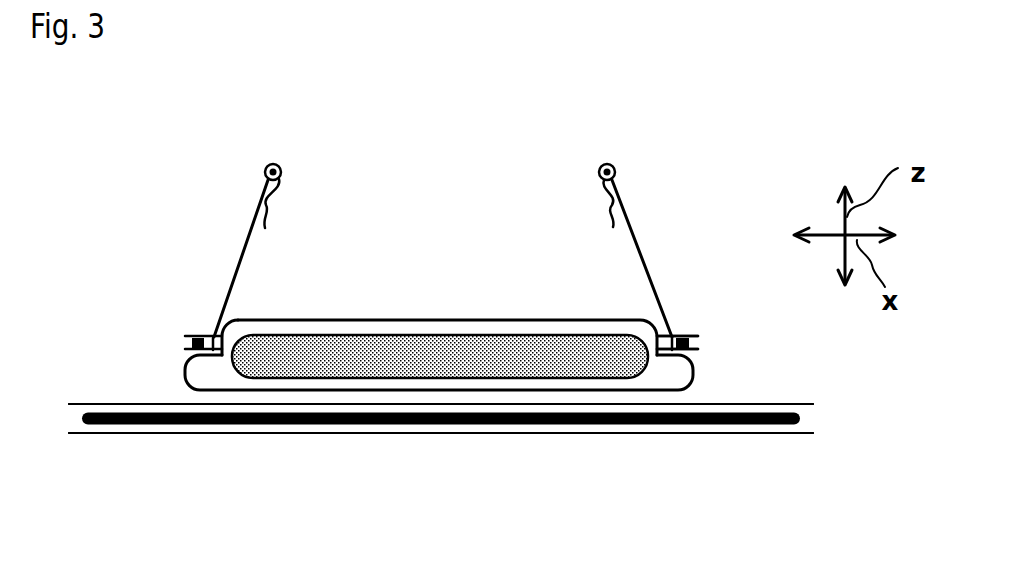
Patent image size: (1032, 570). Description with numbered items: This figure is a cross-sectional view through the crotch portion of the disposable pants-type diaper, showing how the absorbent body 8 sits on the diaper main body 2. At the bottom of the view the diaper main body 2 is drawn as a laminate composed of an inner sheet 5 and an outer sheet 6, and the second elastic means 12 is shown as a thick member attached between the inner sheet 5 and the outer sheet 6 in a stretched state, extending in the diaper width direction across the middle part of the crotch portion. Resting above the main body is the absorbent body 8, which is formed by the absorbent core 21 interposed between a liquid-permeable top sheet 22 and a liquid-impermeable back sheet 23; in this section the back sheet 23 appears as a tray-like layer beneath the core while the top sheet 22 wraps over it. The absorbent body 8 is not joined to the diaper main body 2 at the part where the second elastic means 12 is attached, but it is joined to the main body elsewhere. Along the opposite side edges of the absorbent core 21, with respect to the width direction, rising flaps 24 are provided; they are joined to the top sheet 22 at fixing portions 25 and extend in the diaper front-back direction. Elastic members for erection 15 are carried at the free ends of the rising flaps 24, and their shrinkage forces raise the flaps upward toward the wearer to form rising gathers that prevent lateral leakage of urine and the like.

The diaper main body 2 is at (708, 433).
The inner sheet 5 is at (129, 404).
The outer sheet 6 is at (115, 432).
The absorbent body 8 is at (337, 250).
The second elastic means 12 is at (292, 425).
The elastic members for erection 15 is at (615, 160).
The absorbent core 21 is at (423, 357).
The top sheet 22 is at (518, 320).
The back sheet 23 is at (693, 374).
The rising flaps 24 is at (237, 250).
The fixing portions 25 is at (684, 336).